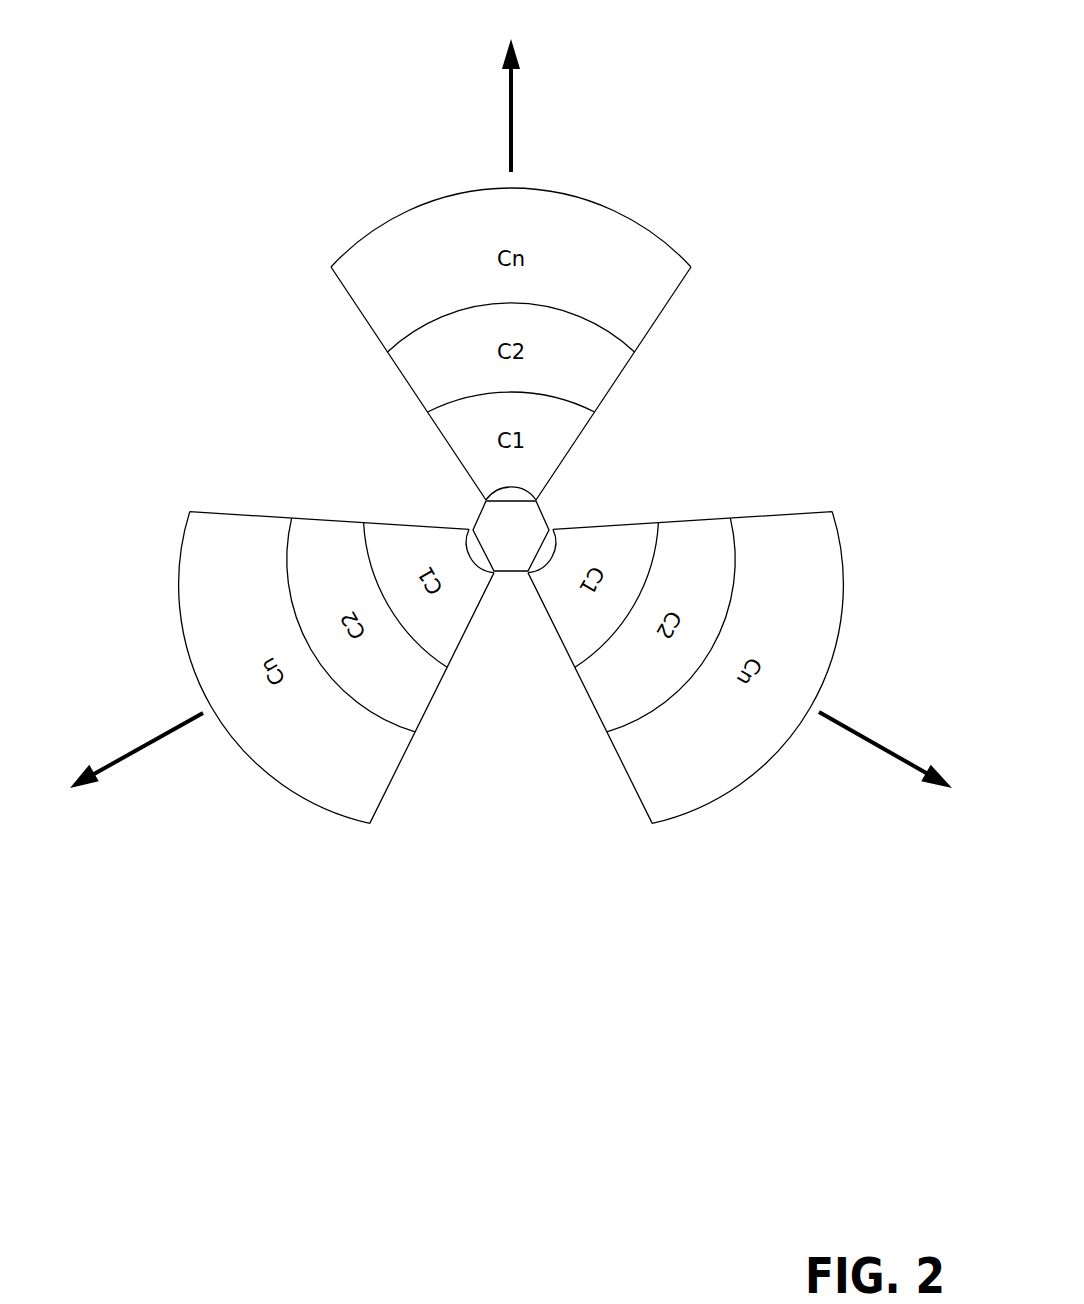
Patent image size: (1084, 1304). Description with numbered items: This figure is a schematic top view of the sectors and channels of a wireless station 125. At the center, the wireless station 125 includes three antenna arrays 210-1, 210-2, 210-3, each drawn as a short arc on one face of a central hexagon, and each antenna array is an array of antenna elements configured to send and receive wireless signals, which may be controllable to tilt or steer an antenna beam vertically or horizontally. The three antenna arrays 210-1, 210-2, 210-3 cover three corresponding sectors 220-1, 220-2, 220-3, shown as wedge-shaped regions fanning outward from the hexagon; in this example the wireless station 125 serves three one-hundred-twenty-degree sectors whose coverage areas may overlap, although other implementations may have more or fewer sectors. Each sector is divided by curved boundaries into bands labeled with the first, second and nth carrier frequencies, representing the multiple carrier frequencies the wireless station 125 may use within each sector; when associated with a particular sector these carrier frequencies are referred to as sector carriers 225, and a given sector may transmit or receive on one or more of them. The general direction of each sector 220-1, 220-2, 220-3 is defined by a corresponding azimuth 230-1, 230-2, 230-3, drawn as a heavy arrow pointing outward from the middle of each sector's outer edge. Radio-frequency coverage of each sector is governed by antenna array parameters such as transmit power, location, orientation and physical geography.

The wireless station 125 is at (168, 66).
The antenna array 210-1 is at (484, 500).
The antenna array 210-2 is at (550, 530).
The antenna array 210-3 is at (503, 574).
The sector 220-1 is at (373, 330).
The sector 220-2 is at (815, 511).
The sector 220-3 is at (387, 783).
The sector carrier 225 is at (627, 363).
The azimuth 230-1 is at (512, 108).
The azimuth 230-2 is at (858, 738).
The azimuth 230-3 is at (140, 752).